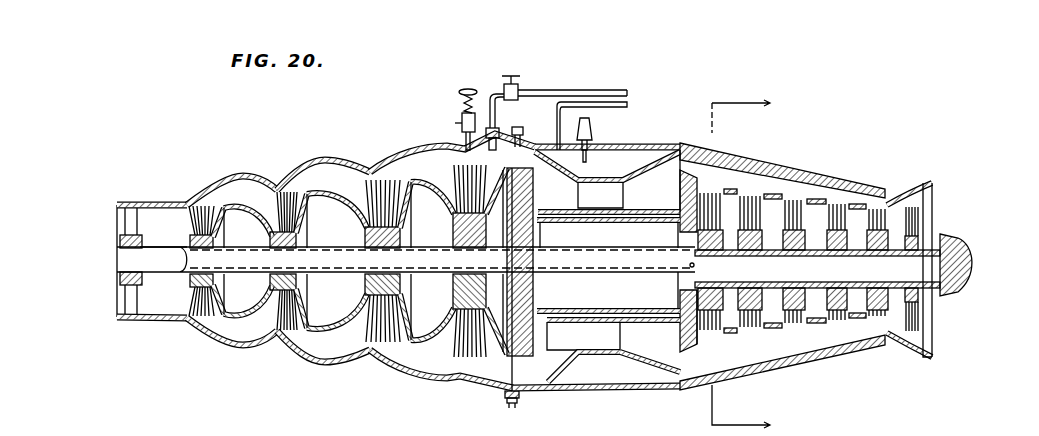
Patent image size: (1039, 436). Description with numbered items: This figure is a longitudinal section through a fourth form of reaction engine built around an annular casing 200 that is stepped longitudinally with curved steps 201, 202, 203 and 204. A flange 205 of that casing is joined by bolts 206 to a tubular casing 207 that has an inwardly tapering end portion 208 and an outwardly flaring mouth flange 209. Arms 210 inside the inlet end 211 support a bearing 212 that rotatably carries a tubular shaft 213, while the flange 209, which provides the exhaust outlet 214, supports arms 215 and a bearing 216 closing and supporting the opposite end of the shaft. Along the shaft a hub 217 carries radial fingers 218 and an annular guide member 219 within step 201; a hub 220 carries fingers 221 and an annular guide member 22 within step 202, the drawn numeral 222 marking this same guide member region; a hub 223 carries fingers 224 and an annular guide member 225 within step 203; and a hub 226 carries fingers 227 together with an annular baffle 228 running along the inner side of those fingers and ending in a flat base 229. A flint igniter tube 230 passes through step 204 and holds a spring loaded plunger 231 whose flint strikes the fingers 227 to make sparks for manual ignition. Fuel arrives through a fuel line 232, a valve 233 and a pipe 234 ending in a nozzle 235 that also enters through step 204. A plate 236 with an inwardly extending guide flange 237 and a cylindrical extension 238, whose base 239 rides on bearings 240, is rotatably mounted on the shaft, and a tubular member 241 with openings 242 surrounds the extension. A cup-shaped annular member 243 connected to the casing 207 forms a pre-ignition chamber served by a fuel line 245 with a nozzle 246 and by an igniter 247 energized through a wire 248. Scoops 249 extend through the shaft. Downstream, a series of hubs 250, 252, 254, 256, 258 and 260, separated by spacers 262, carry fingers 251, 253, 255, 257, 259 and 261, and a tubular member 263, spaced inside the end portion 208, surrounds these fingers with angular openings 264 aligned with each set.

The annular guide member 22 is at (741, 264).
The annular casing 200 is at (186, 203).
The curved step 201 is at (243, 176).
The curved step 202 is at (325, 159).
The curved step 203 is at (440, 146).
The curved step 204 is at (508, 405).
The flange 205 is at (516, 403).
The bolts 206 is at (520, 396).
The tubular casing 207 is at (612, 388).
The inwardly tapering end portion 208 is at (825, 352).
The outwardly flaring mouth flange 209 is at (921, 358).
The arms 210 is at (128, 300).
The inlet end 211 is at (118, 210).
The bearing 212 is at (120, 278).
The tubular shaft 213 is at (185, 250).
The exhaust outlet 214 is at (913, 337).
The arms 215 is at (933, 318).
The bearing 216 is at (963, 283).
The hub 217 is at (187, 277).
The fingers 218 is at (200, 316).
The annular guide member 219 is at (230, 340).
The hub 220 is at (293, 283).
The fingers 221 is at (278, 332).
The second stage casing section 222 is at (330, 362).
The hub 223 is at (400, 240).
The fingers 224 is at (385, 355).
The annular guide member 225 is at (498, 316).
The hub 226 is at (453, 292).
The fingers 227 is at (505, 355).
The annular baffle 228 is at (463, 208).
The flat base 229 is at (497, 370).
The flint igniter tube 230 is at (457, 123).
The spring loaded plunger 231 is at (468, 88).
The fuel line 232 is at (545, 90).
The valve 233 is at (518, 86).
The pipe 234 is at (496, 112).
The nozzle 235 is at (494, 146).
The plate 236 is at (565, 337).
The guide flange 237 is at (600, 194).
The cylindrical extension 238 is at (575, 311).
The base 239 is at (672, 236).
The bearings 240 is at (537, 290).
The tubular member 241 is at (633, 323).
The openings 242 is at (620, 210).
The annular member 243 is at (655, 172).
The fuel line 245 is at (628, 105).
The nozzle 246 is at (519, 140).
The igniter 247 is at (593, 132).
The wire 248 is at (596, 120).
The scoops 249 is at (575, 163).
The hub 250 is at (710, 252).
The fingers 251 is at (672, 218).
The hub 252 is at (748, 252).
The fingers 253 is at (768, 222).
The hub 254 is at (798, 252).
The fingers 255 is at (812, 222).
The hub 256 is at (840, 252).
The fingers 257 is at (852, 222).
The hub 258 is at (880, 252).
The fingers 259 is at (880, 200).
The hub 260 is at (920, 243).
The fingers 261 is at (917, 222).
The spacers 262 is at (798, 340).
The tubular member 263 is at (735, 352).
The angular openings 264 is at (808, 200).